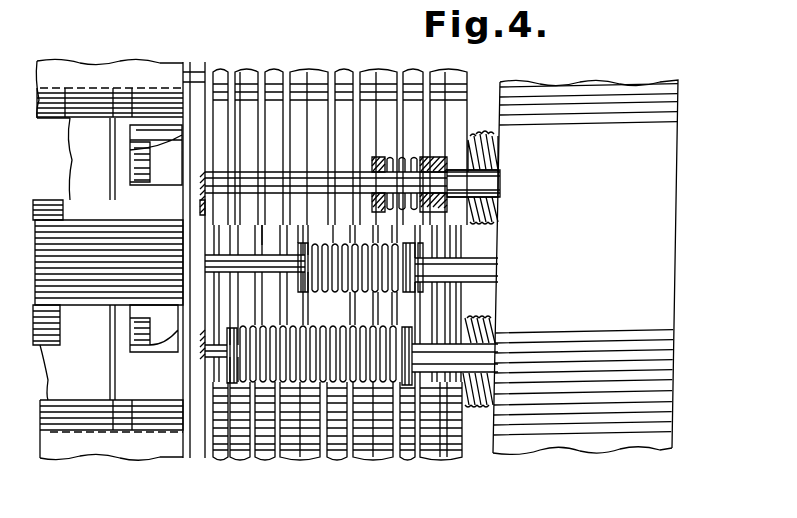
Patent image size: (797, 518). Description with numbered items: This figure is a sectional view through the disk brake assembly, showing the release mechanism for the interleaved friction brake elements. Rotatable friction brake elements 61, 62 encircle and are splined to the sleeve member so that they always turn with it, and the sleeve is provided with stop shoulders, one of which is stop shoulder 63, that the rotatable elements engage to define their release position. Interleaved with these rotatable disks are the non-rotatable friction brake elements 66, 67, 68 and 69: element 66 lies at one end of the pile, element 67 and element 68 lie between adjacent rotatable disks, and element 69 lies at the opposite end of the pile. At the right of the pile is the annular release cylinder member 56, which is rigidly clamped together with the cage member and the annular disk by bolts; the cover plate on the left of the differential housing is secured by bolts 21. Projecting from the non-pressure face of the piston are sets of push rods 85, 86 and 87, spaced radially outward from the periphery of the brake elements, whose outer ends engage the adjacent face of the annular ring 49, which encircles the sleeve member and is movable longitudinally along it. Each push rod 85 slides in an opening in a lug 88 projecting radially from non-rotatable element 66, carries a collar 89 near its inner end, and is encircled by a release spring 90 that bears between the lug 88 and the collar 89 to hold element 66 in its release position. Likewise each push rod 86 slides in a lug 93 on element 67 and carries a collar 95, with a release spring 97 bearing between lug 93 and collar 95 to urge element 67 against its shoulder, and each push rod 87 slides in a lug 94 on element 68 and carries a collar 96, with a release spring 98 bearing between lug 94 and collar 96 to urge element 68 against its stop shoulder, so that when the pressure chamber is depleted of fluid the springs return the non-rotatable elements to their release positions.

The bolts 21 is at (150, 163).
The annular ring 49 is at (205, 205).
The release cylinder member 56 is at (512, 445).
The rotatable friction brake element 61 is at (265, 445).
The rotatable friction brake element 62 is at (338, 445).
The stop shoulder 63 is at (410, 445).
The non-rotatable friction brake element 66 is at (232, 298).
The non-rotatable friction brake element 67 is at (280, 200).
The non-rotatable friction brake element 68 is at (372, 218).
The non-rotatable friction brake element 69 is at (450, 445).
The push rod 85 is at (480, 355).
The push rod 86 is at (478, 272).
The push rod 87 is at (480, 195).
The lug 88 is at (225, 370).
The collar 89 is at (403, 385).
The release spring 90 is at (312, 440).
The lug 93 is at (308, 203).
The lug 94 is at (383, 160).
The collar 95 is at (455, 285).
The collar 96 is at (445, 166).
The release spring 97 is at (310, 277).
The release spring 98 is at (385, 195).